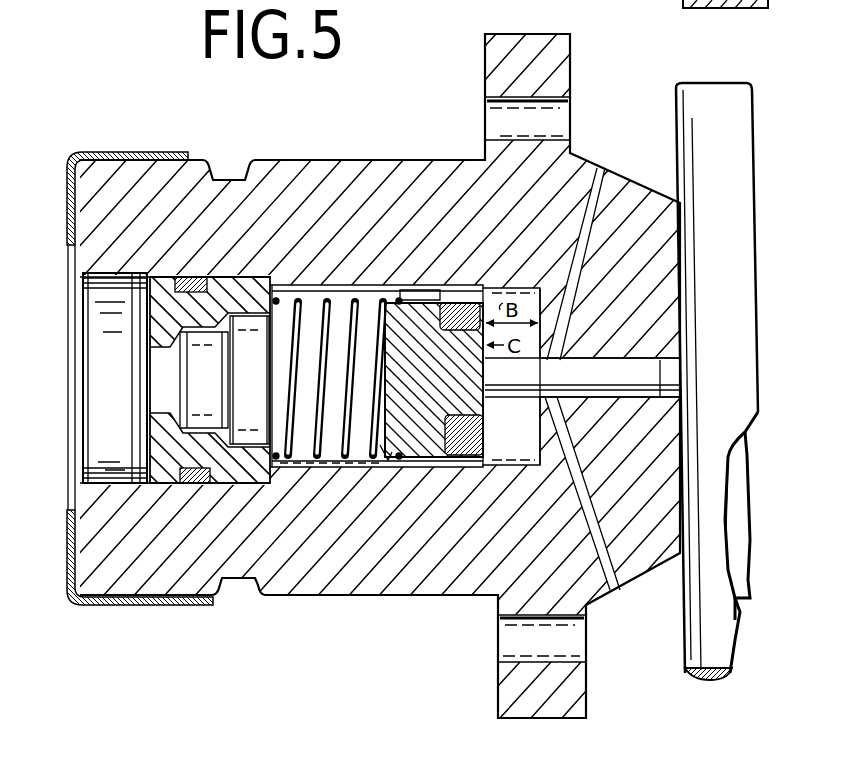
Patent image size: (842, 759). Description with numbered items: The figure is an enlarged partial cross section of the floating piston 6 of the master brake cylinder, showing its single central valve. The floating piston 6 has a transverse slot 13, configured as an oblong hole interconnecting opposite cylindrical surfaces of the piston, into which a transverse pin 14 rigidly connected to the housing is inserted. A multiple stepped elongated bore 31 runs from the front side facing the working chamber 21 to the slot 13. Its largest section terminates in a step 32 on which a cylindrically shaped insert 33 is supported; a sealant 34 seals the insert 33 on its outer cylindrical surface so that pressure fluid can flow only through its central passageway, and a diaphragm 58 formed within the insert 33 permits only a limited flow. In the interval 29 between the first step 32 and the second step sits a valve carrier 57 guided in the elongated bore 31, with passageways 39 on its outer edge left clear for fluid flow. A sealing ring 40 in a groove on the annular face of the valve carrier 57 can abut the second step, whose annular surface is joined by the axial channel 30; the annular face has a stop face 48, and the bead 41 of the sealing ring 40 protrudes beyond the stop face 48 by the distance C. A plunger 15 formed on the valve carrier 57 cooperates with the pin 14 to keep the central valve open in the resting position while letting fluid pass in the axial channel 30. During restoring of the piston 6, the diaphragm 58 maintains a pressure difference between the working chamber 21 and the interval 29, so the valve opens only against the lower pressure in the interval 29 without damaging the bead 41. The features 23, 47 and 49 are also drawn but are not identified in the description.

The floating piston 6 is at (178, 555).
The slot 13 is at (742, 562).
The transverse pin 14 is at (745, 138).
The plunger 15 is at (690, 402).
The working chamber 21 is at (105, 437).
The inclined bore 23 is at (600, 200).
The interval 29 is at (330, 468).
The axial channel 30 is at (690, 345).
The elongated bore 31 is at (385, 468).
The step 32 is at (293, 285).
The insert 33 is at (245, 282).
The sealant 34 is at (205, 280).
The passageways 39 is at (425, 287).
The sealing ring 40 is at (445, 458).
The bead 41 is at (480, 465).
The protective sheath 47 is at (122, 152).
The stop face 48 is at (480, 410).
The spring chamber 49 is at (300, 470).
The valve carrier 57 is at (400, 305).
The diaphragm 58 is at (160, 383).